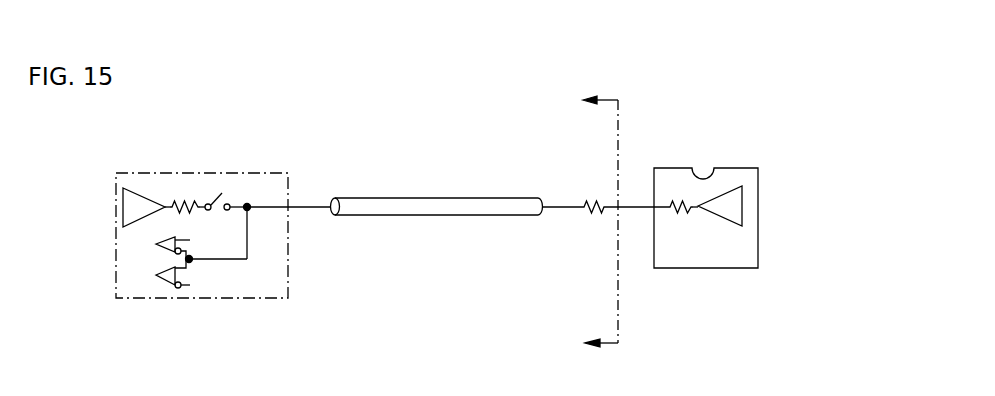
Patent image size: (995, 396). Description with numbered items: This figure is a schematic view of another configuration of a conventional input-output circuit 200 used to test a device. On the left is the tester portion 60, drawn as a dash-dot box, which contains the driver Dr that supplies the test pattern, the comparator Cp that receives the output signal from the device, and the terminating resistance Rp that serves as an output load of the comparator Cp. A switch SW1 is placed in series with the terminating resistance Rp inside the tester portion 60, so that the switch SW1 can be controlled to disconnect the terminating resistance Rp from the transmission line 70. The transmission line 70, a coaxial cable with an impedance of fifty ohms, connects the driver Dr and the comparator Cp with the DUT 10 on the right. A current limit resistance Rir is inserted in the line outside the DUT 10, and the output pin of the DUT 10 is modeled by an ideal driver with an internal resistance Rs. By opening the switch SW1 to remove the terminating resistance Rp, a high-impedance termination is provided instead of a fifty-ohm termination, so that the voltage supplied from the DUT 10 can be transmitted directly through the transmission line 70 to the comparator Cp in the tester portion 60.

The DUT 10 is at (706, 242).
The tester portion 60 is at (186, 298).
The transmission line 70 is at (398, 215).
The input-output circuit 200 is at (582, 226).
The driver Dr is at (144, 207).
The terminating resistance Rp is at (185, 195).
The switch SW1 is at (233, 195).
The comparator Cp is at (164, 262).
The current limit resistance Rir is at (584, 214).
The series resistor Rs is at (679, 194).